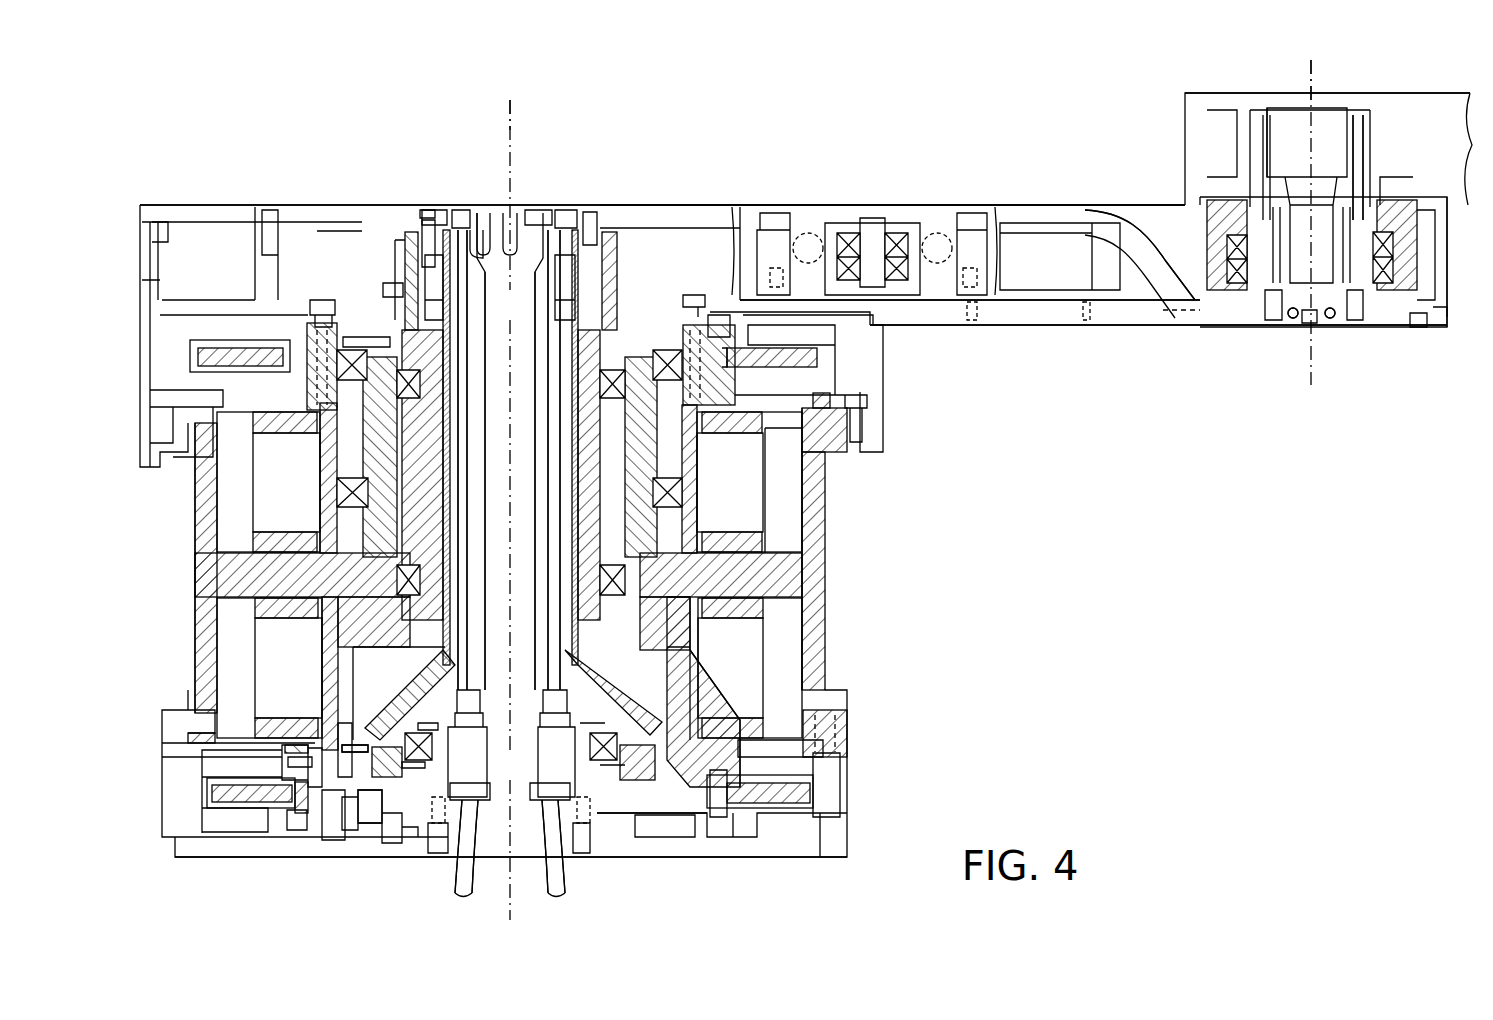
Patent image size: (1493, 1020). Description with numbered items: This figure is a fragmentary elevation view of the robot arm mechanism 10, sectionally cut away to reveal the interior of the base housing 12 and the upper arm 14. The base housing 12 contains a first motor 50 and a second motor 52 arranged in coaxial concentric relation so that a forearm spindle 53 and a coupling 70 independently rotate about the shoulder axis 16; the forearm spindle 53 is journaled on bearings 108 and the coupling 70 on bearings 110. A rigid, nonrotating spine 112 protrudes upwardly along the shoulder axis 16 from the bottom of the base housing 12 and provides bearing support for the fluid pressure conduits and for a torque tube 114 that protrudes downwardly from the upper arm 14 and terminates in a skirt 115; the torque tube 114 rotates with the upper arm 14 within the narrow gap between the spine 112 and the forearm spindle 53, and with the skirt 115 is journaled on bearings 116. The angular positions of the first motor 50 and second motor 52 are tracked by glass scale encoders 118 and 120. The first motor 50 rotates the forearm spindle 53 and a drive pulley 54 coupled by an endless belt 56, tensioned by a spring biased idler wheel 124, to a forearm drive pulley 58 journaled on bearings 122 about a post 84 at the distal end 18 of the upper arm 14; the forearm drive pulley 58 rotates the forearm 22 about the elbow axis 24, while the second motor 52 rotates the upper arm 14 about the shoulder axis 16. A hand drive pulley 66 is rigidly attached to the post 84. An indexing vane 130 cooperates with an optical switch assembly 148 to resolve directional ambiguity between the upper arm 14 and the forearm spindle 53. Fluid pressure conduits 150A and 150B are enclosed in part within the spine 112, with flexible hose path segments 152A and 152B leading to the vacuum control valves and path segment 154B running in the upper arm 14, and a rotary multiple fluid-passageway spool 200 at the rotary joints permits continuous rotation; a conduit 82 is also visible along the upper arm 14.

The robot arm mechanism 10 is at (1018, 633).
The base housing 12 is at (617, 840).
The upper arm 14 is at (1033, 307).
The shoulder axis 16 is at (514, 128).
The distal end 18 is at (1437, 297).
The forearm 22 is at (1430, 117).
The elbow axis 24 is at (1313, 85).
The first motor 50 is at (277, 683).
The second motor 52 is at (272, 493).
The forearm spindle 53 is at (393, 632).
The drive pulley 54 is at (413, 230).
The endless belt 56 is at (1034, 265).
The forearm drive pulley 58 is at (1410, 258).
The hand drive pulley 66 is at (1367, 158).
The coupling 70 is at (287, 398).
The conduit 82 is at (943, 327).
The post 84 is at (1322, 313).
The bearings 108 is at (607, 387).
The bearings 110 is at (350, 355).
The spine 112 is at (492, 318).
The torque tube 114 is at (567, 250).
The skirt 115 is at (637, 767).
The bearings 116 is at (597, 747).
The glass scale encoder 118 is at (243, 797).
The glass scale encoder 120 is at (222, 357).
The bearings 122 is at (1243, 255).
The spring biased idler wheel 124 is at (883, 232).
The indexing vane 130 is at (357, 779).
The optical switch assembly 148 is at (370, 828).
The fluid pressure conduit 150A is at (468, 420).
The fluid pressure conduit 150B is at (552, 438).
The path segment 152A is at (463, 877).
The path segment 152B is at (557, 880).
The path segment 154B is at (707, 217).
The rotary multiple fluid-passageway spool 200 is at (495, 250).